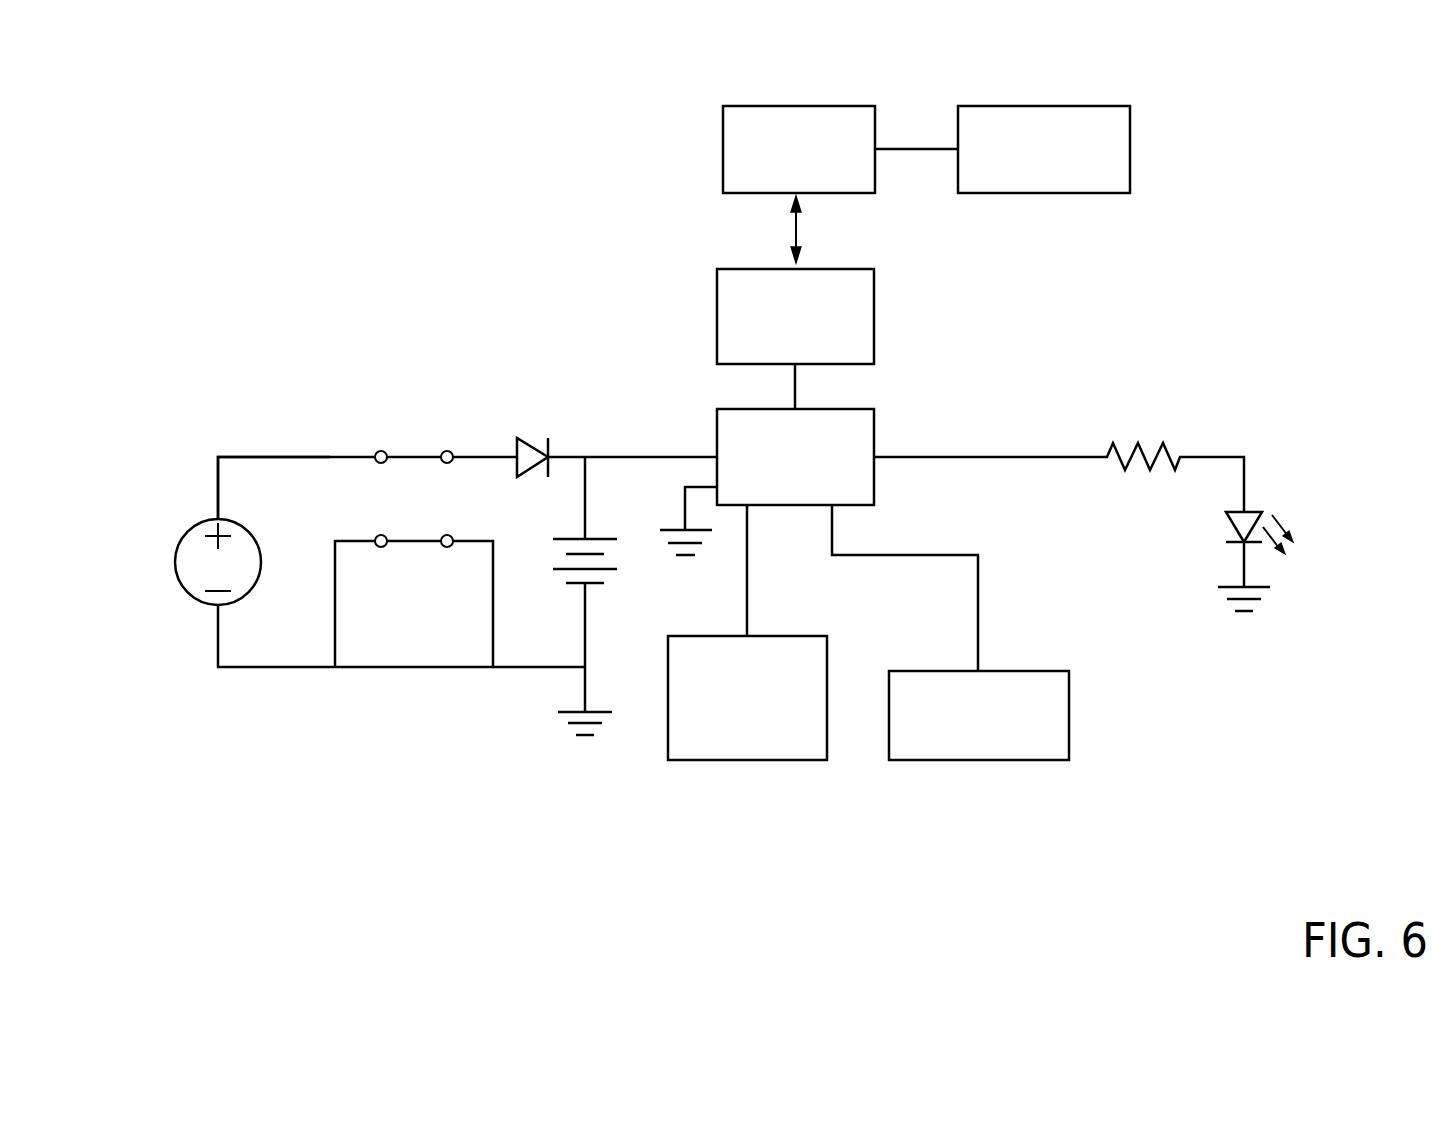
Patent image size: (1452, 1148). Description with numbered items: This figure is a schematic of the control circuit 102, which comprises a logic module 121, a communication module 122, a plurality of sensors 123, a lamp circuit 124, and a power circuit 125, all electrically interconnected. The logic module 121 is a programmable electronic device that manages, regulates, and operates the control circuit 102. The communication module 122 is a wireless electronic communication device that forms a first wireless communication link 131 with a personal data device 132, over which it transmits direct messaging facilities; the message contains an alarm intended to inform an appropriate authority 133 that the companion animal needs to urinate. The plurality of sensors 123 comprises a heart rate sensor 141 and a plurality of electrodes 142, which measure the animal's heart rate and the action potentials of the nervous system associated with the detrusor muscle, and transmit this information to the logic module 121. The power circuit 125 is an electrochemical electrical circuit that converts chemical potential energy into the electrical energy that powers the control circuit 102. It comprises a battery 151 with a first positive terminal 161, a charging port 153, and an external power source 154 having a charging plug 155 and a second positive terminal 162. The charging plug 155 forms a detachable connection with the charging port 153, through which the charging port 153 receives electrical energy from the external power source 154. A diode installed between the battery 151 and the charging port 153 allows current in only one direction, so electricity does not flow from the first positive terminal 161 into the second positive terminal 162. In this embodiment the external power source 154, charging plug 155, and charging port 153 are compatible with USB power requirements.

The control circuit 102 is at (517, 197).
The logic module 121 is at (874, 423).
The communication module 122 is at (874, 316).
The plurality of sensors 123 is at (868, 709).
The lamp circuit 124 is at (1225, 404).
The power circuit 125 is at (430, 587).
The first wireless communication link 131 is at (800, 228).
The personal data device 132 is at (790, 118).
The appropriate authority 133 is at (1120, 152).
The heart rate sensor 141 is at (748, 762).
The plurality of electrodes 142 is at (950, 672).
The battery 151 is at (605, 637).
The charging port 153 is at (447, 450).
The external power source 154 is at (207, 598).
The charging plug 155 is at (381, 450).
The first positive terminal 161 is at (585, 500).
The second positive terminal 162 is at (218, 490).